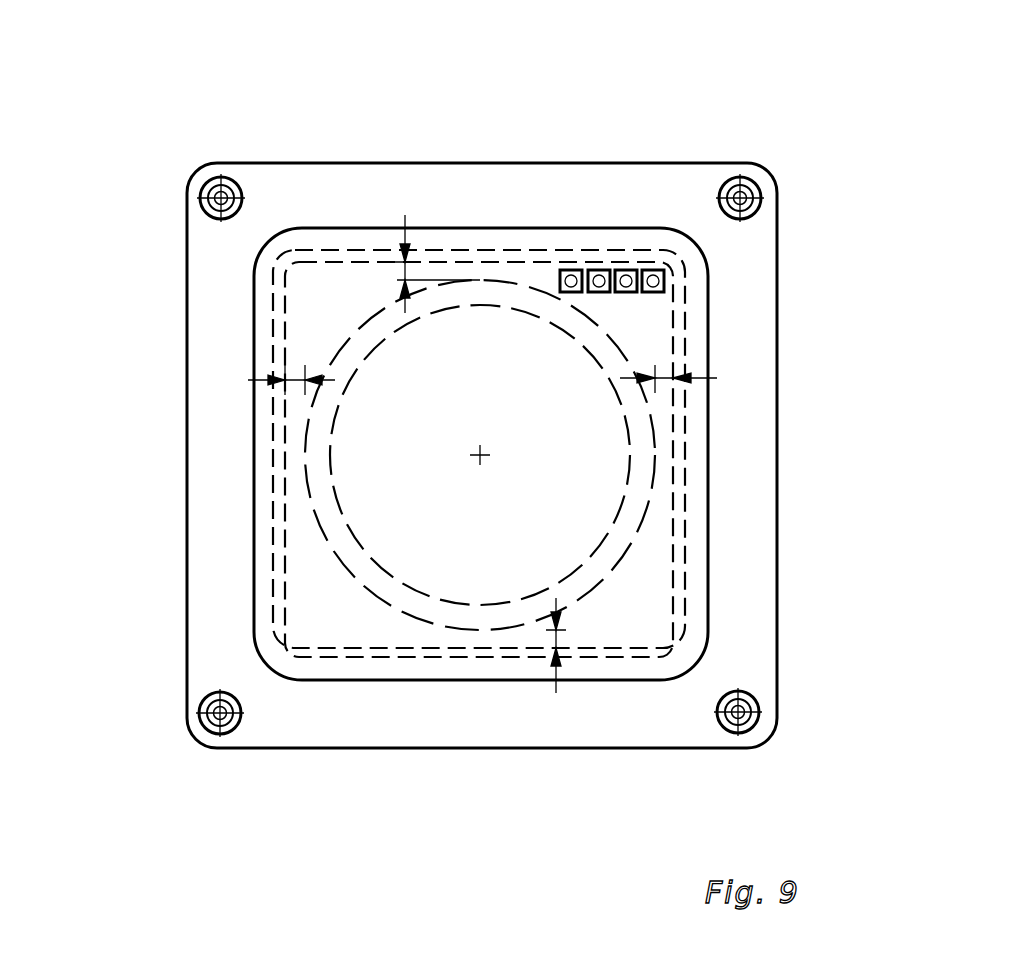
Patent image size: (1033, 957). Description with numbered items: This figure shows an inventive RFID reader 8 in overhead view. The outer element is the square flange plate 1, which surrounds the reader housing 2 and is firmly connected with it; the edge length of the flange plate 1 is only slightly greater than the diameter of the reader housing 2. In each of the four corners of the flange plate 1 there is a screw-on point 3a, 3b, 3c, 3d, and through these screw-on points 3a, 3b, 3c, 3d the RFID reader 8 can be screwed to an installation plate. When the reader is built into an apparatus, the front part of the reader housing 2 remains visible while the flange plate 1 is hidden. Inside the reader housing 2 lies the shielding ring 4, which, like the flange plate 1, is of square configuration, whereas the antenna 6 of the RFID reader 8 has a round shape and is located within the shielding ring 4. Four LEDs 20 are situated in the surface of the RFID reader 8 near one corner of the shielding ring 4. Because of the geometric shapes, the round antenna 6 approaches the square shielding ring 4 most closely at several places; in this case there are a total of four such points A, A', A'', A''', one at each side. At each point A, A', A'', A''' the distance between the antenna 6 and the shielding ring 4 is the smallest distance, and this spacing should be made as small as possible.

The flange plate 1 is at (752, 625).
The reader housing 2 is at (250, 516).
The screw-on point 3a is at (758, 191).
The screw-on point 3b is at (752, 723).
The screw-on point 3c is at (206, 721).
The screw-on point 3d is at (213, 192).
The shielding ring 4 is at (327, 652).
The antenna 6 is at (640, 510).
The RFID reader 8 is at (841, 296).
The LEDs 20 is at (573, 274).
The point of smallest distance A is at (749, 392).
The point of smallest distance A' is at (586, 713).
The point of smallest distance A'' is at (356, 192).
The point of smallest distance A''' is at (209, 320).